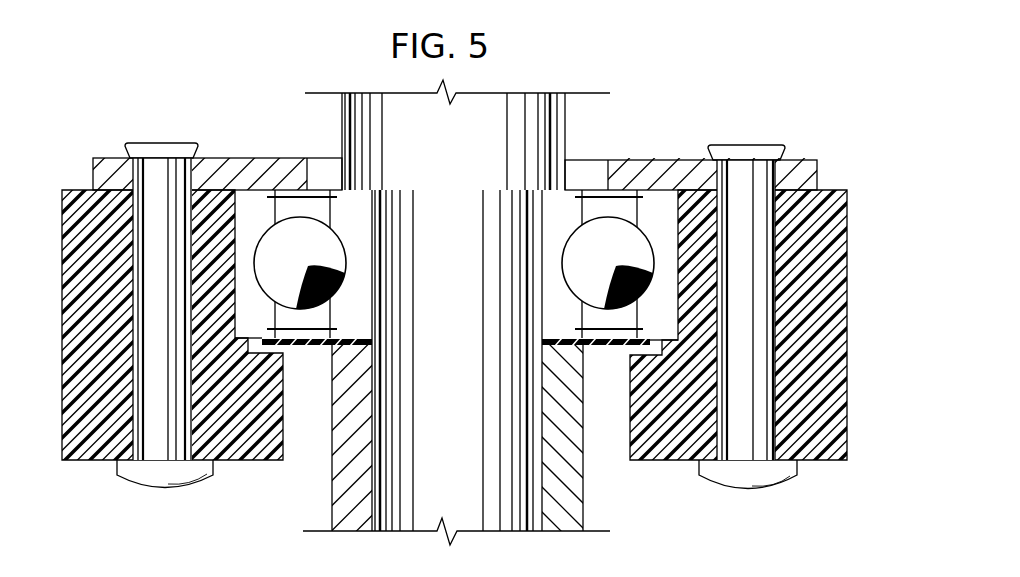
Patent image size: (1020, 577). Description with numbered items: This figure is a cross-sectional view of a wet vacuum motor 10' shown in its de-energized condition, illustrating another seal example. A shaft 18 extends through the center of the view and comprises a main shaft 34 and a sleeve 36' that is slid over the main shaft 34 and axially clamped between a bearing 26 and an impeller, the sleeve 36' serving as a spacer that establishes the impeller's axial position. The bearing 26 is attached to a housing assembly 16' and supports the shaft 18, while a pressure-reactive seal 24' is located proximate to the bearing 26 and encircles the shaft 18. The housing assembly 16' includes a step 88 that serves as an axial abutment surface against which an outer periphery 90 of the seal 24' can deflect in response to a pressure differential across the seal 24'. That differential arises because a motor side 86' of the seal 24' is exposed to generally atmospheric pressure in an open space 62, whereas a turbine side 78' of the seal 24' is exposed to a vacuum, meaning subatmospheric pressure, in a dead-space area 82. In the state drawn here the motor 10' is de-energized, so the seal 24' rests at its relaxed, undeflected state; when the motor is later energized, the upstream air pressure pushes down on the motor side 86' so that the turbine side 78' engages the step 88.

The motor 10' is at (551, 296).
The housing assembly 16' is at (145, 331).
The shaft 18 is at (457, 312).
The seal 24' is at (303, 378).
The bearing 26 is at (251, 188).
The main shaft 34 is at (342, 108).
The sleeve 36' is at (510, 345).
The open space 62 is at (315, 146).
The turbine side 78' is at (610, 378).
The dead-space area 82 is at (618, 466).
The motor side 86' is at (300, 277).
The step 88 is at (252, 353).
The outer periphery 90 is at (650, 340).